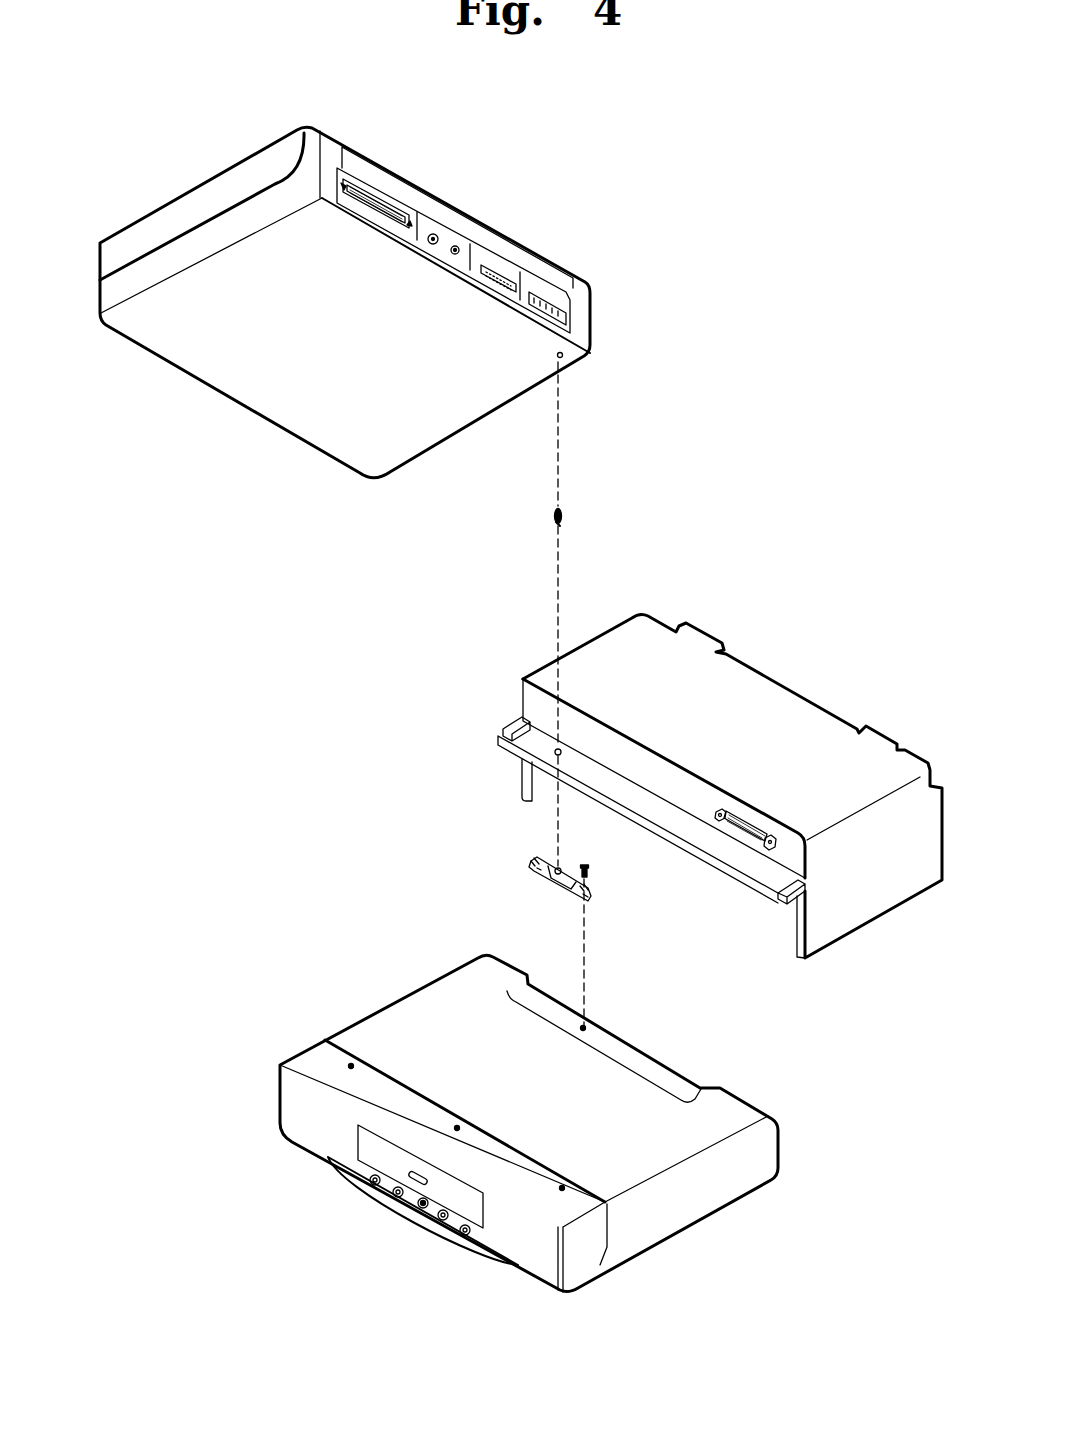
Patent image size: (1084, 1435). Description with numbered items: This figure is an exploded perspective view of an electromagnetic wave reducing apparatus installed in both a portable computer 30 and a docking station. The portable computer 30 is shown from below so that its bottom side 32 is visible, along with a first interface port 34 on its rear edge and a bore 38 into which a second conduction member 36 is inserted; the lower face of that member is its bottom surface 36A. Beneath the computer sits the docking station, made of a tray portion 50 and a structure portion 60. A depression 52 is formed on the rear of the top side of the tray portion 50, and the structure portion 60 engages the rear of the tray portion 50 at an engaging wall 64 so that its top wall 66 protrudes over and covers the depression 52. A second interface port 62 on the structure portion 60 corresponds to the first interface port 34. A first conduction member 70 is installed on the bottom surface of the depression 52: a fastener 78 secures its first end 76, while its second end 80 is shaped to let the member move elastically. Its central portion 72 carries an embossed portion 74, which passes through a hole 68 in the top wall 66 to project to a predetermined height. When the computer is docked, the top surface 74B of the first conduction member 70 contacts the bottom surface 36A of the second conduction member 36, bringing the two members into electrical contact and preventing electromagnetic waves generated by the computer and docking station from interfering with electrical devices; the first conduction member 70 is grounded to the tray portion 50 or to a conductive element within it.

The portable computer 30 is at (378, 296).
The bottom side 32 is at (483, 410).
The first interface port 34 is at (378, 188).
The second conduction member 36 is at (564, 538).
The bottom surface 36A is at (555, 528).
The bore 38 is at (566, 356).
The tray portion 50 is at (529, 1123).
The depression 52 is at (623, 1047).
The structure portion 60 is at (720, 792).
The second interface port 62 is at (730, 812).
The engaging wall 64 is at (802, 947).
The top wall 66 is at (714, 864).
The hole 68 is at (562, 750).
The first conduction member 70 is at (560, 864).
The central portion 72 is at (560, 873).
The embossed portion 74 is at (556, 867).
The top surface 74B is at (557, 882).
The first end 76 is at (589, 893).
The fastener 78 is at (588, 872).
The second end 80 is at (531, 867).